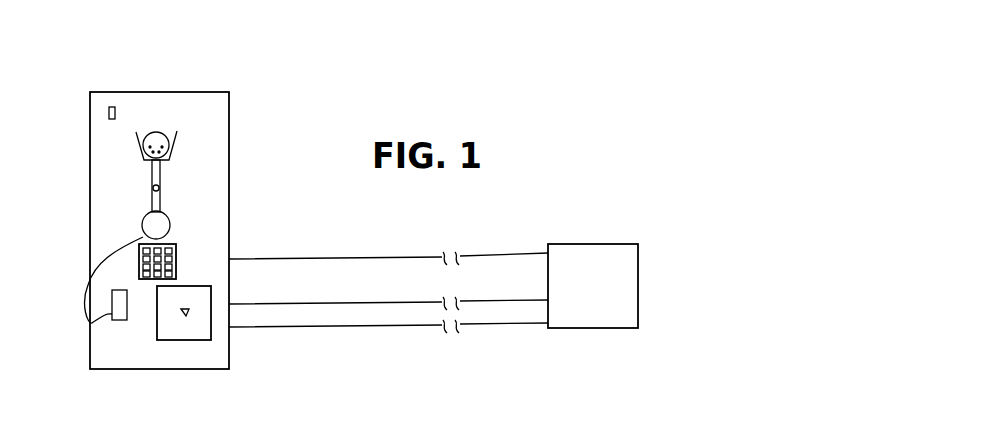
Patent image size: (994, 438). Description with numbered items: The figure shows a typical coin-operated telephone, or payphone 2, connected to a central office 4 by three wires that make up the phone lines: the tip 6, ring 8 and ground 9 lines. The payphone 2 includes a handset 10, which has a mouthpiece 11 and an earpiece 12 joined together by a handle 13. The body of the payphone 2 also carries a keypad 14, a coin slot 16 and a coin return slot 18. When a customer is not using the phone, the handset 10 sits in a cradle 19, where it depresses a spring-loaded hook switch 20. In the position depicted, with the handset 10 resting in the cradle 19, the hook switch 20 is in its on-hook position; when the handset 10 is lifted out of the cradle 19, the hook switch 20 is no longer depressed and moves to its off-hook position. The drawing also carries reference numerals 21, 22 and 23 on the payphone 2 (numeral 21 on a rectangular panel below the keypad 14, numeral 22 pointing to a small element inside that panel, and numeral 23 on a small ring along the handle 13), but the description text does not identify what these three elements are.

The payphone 2 is at (115, 92).
The central office 4 is at (592, 244).
The tip line 6 is at (352, 257).
The ring line 8 is at (326, 303).
The ground line 9 is at (320, 328).
The handset 10 is at (185, 115).
The mouthpiece 11 is at (142, 222).
The earpiece 12 is at (157, 132).
The handle 13 is at (149, 175).
The keypad 14 is at (178, 257).
The coin slot 16 is at (109, 113).
The coin return slot 18 is at (92, 323).
The cradle 19 is at (133, 138).
The hook switch 20 is at (172, 143).
The display 21 is at (184, 340).
The pointer 22 is at (189, 311).
The ring 23 is at (160, 188).